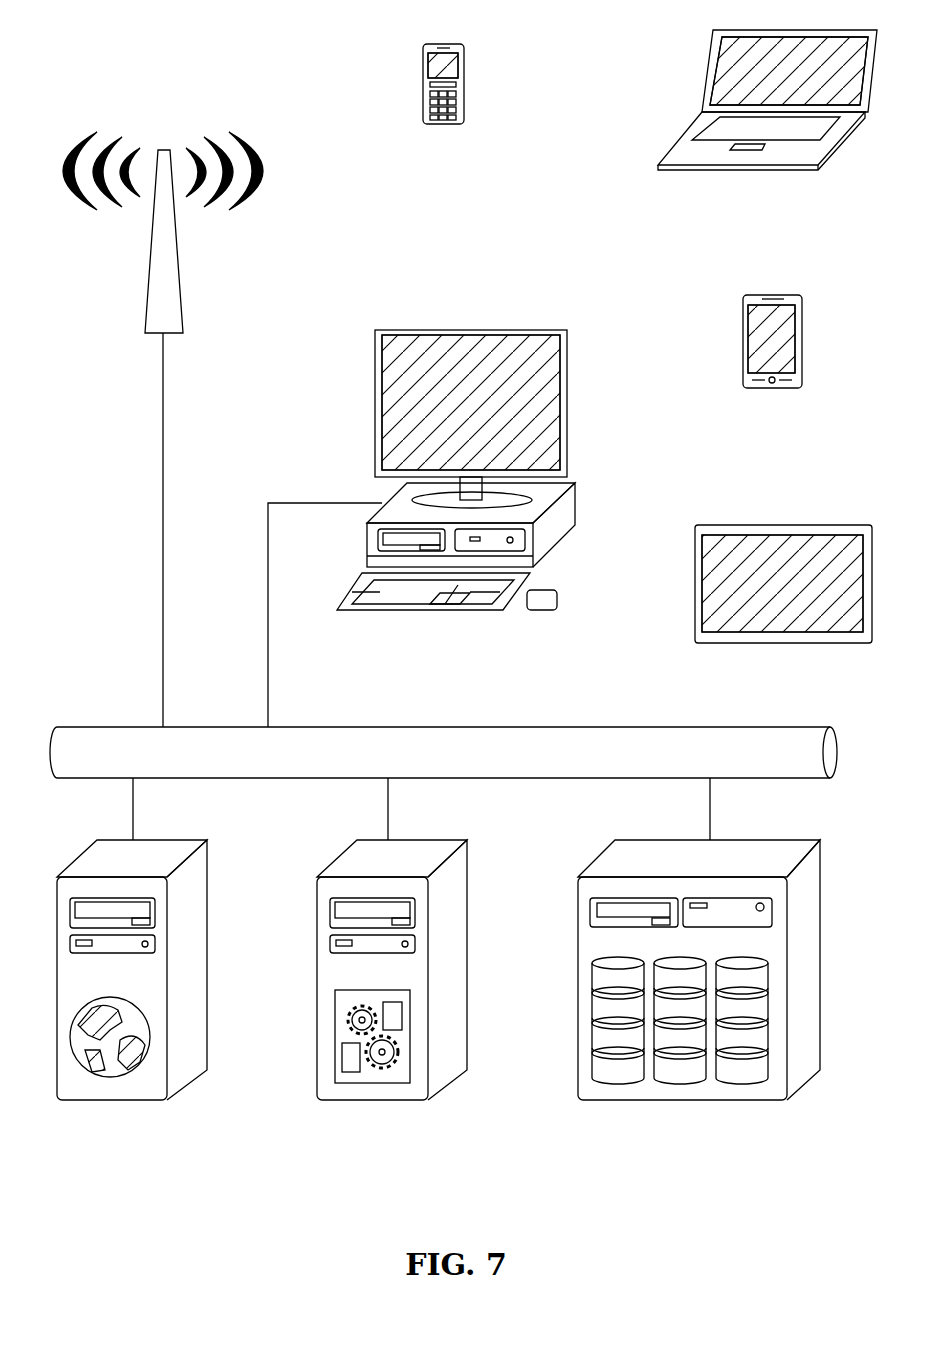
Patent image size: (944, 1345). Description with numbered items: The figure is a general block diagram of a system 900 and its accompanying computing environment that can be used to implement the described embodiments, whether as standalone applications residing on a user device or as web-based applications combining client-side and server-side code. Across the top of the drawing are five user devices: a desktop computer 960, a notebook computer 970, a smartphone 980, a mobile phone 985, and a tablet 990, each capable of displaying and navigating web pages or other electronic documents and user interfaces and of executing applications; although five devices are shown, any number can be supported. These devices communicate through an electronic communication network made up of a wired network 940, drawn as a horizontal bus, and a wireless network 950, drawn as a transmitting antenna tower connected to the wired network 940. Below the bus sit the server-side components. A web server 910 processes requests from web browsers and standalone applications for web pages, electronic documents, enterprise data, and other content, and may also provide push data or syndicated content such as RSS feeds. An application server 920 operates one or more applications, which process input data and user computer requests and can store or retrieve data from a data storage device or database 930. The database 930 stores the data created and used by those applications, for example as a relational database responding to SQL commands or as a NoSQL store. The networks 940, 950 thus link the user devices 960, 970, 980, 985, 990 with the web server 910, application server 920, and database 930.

The system 900 is at (125, 65).
The web server 910 is at (118, 1093).
The application server 920 is at (373, 1092).
The data storage device or database 930 is at (672, 1083).
The wired network 940 is at (443, 752).
The wireless network 950 is at (190, 240).
The desktop computer 960 is at (452, 617).
The notebook computer 970 is at (775, 200).
The smartphone 980 is at (775, 400).
The mobile phone 985 is at (446, 142).
The tablet 990 is at (778, 643).